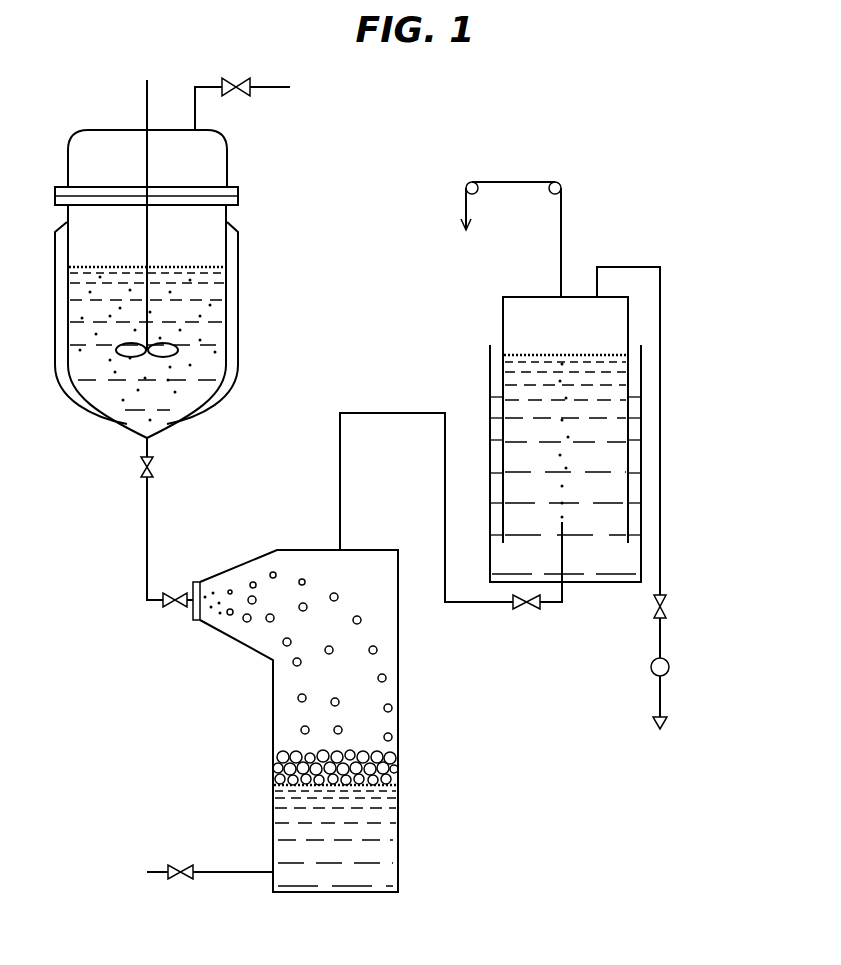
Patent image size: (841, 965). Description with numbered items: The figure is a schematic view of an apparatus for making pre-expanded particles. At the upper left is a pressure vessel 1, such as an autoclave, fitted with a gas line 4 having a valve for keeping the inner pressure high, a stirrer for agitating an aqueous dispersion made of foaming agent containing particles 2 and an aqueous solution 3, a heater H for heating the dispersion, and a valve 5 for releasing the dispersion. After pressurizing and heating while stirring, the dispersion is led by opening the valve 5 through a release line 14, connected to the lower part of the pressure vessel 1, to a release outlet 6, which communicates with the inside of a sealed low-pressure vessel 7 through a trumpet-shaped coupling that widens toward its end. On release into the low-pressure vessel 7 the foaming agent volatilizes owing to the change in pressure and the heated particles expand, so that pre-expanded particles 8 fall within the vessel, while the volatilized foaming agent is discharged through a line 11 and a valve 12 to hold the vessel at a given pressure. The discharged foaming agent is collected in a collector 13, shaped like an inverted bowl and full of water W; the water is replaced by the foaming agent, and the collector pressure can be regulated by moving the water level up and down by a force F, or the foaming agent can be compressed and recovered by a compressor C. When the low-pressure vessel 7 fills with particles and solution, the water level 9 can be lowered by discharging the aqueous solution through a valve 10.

The pressure vessel 1 is at (226, 172).
The foaming agent containing particles 2 is at (217, 298).
The aqueous solution 3 is at (213, 363).
The gas line 4 is at (273, 88).
The valve 5 is at (140, 458).
The release outlet 6 is at (193, 612).
The low-pressure vessel 7 is at (398, 677).
The pre-expanded particles 8 is at (297, 662).
The water level 9 is at (275, 790).
The valve 10 is at (180, 878).
The line 11 is at (340, 467).
The valve 12 is at (527, 610).
The collector 13 is at (570, 297).
The release line 14 is at (147, 532).
The heater H is at (232, 248).
The water W is at (523, 448).
The force F is at (508, 239).
The compressor C is at (652, 678).